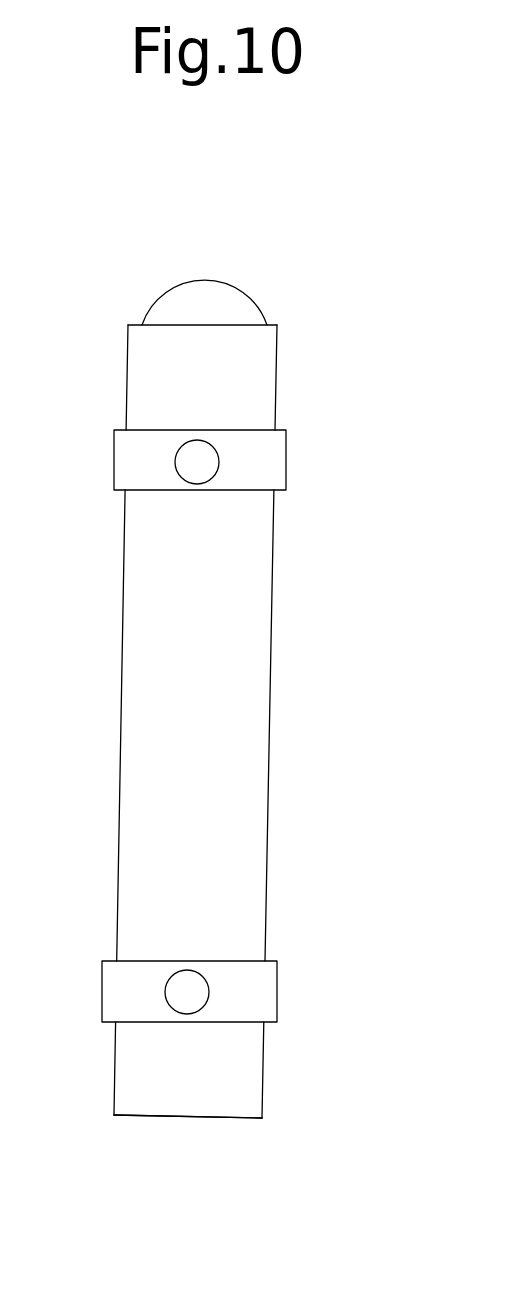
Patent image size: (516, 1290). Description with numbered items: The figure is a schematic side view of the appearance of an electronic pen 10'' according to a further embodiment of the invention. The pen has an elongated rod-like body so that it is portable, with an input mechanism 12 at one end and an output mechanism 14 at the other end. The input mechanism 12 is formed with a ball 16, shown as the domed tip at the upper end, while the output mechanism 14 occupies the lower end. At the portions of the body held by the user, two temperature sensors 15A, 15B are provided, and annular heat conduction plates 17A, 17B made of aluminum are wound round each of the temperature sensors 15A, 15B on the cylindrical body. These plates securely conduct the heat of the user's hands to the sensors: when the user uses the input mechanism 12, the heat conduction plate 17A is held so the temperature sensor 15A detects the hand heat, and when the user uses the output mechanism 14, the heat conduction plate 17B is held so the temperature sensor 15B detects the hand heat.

The electronic pen 10'' is at (197, 666).
The input mechanism 12 is at (287, 322).
The output mechanism 14 is at (277, 1113).
The temperature sensor 15A is at (200, 459).
The temperature sensor 15B is at (190, 990).
The ball 16 is at (208, 300).
The heat conduction plate 17A is at (250, 468).
The heat conduction plate 17B is at (253, 980).